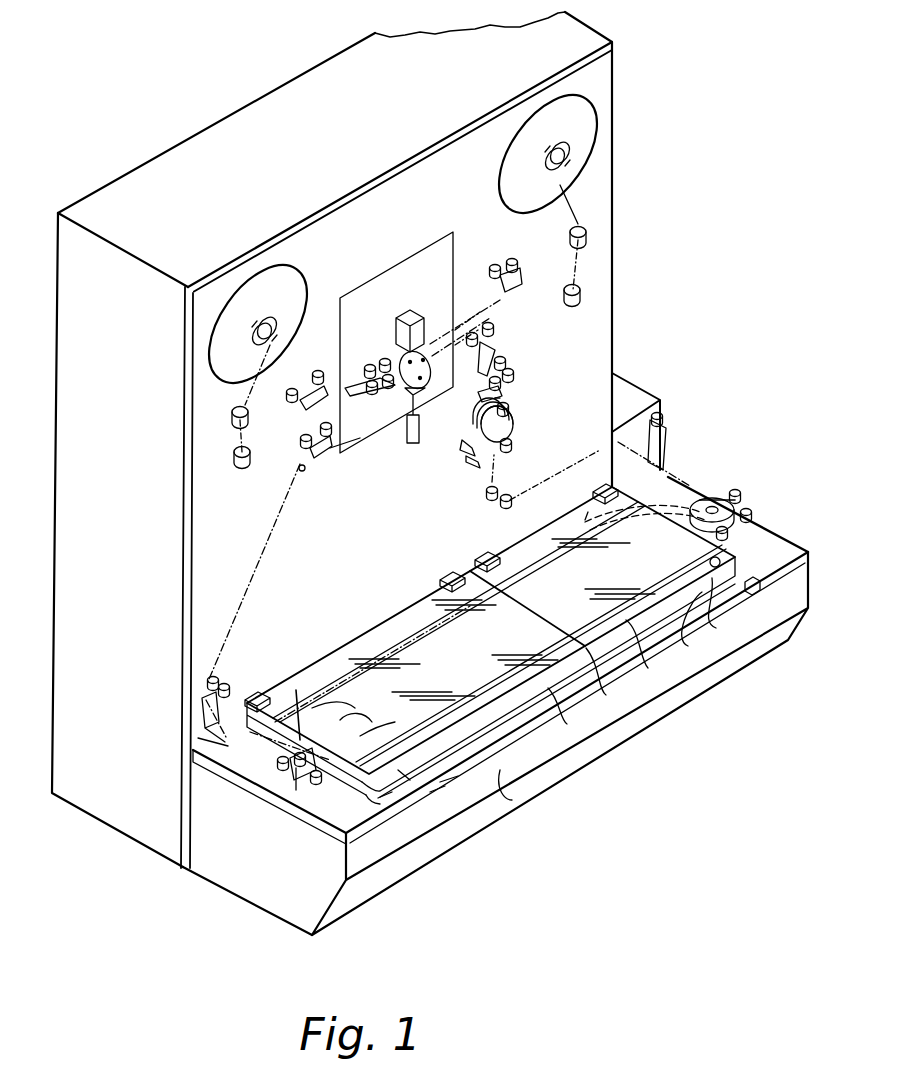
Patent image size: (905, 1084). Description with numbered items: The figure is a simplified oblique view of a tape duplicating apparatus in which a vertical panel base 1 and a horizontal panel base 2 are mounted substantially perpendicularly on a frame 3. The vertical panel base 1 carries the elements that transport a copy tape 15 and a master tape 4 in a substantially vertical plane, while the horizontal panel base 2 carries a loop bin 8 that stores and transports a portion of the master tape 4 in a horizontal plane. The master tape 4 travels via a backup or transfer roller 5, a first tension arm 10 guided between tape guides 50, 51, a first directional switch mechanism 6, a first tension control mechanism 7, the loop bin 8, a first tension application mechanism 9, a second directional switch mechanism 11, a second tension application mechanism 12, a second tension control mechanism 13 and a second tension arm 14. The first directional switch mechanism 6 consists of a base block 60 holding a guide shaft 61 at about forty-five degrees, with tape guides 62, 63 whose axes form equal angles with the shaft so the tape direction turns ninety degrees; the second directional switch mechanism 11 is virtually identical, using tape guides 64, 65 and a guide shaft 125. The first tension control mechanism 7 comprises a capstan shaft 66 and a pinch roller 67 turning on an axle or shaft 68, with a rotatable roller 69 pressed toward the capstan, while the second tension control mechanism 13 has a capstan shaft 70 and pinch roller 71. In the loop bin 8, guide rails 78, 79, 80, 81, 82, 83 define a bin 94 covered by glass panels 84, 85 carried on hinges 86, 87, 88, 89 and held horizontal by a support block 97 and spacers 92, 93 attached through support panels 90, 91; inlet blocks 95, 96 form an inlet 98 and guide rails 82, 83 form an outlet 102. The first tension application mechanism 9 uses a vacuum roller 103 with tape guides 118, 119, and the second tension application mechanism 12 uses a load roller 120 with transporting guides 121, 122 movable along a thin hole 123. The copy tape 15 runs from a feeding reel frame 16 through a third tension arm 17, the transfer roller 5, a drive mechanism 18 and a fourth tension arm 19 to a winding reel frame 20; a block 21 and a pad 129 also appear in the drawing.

The vertical panel base 1 is at (604, 262).
The horizontal panel base 2 is at (382, 804).
The frame 3 is at (78, 498).
The master tape 4 is at (262, 581).
The backup or transfer roller 5 is at (401, 420).
The first directional switch mechanism 6 is at (171, 706).
The first tension control mechanism 7 is at (273, 829).
The loop bin 8 is at (583, 778).
The first tension application mechanism 9 is at (735, 504).
The first tension arm 10 is at (318, 455).
The second directional switch mechanism 11 is at (705, 418).
The second tension application mechanism 12 is at (533, 437).
The second tension control mechanism 13 is at (521, 388).
The second tension arm 14 is at (484, 356).
The copy tape 15 is at (280, 438).
The feeding reel frame 16 is at (574, 152).
The third tension arm 17 is at (506, 290).
The drive mechanism 18 is at (331, 333).
The fourth tension arm 19 is at (304, 402).
The winding reel frame 20 is at (283, 320).
The cutter block 21 is at (404, 312).
The tape guide 50 is at (302, 472).
The tape guide 51 is at (378, 452).
The base block 60 is at (207, 690).
The guide shaft 61 is at (200, 742).
The tape guide 62 is at (210, 678).
The tape guide 63 is at (283, 766).
The tape guide 64 is at (668, 410).
The tape guide 65 is at (741, 492).
The capstan shaft 66 is at (296, 766).
The pinch roller 67 is at (320, 790).
The axle or shaft 68 is at (302, 790).
The rotatable roller 69 is at (380, 800).
The capstan shaft 70 is at (482, 398).
The pinch roller 71 is at (513, 371).
The guide rail 78 is at (390, 622).
The guide rail 79 is at (505, 745).
The guide rail 80 is at (298, 690).
The guide rail 81 is at (458, 778).
The guide rail 82 is at (585, 520).
The guide rail 83 is at (694, 625).
The glass panel 84 is at (569, 712).
The glass panel 85 is at (649, 650).
The hinge 86 is at (265, 690).
The hinge 87 is at (450, 578).
The hinge 88 is at (485, 555).
The hinge 89 is at (600, 488).
The support panel 90 is at (408, 780).
The support panel 91 is at (748, 594).
The spacer 92 is at (438, 792).
The spacer 93 is at (723, 609).
The bin 94 is at (608, 677).
The inlet block 95 is at (358, 702).
The inlet block 96 is at (396, 722).
The support block 97 is at (510, 800).
The inlet 98 is at (362, 702).
The outlet 102 is at (718, 556).
The vacuum roller 103 is at (710, 498).
The tape guide 118 is at (728, 530).
The tape guide 119 is at (752, 512).
The load roller 120 is at (513, 422).
The transporting guide 121 is at (510, 410).
The transporting guide 122 is at (510, 447).
The thin hole 123 is at (462, 441).
The guide shaft 125 is at (690, 447).
The pad 129 is at (468, 460).